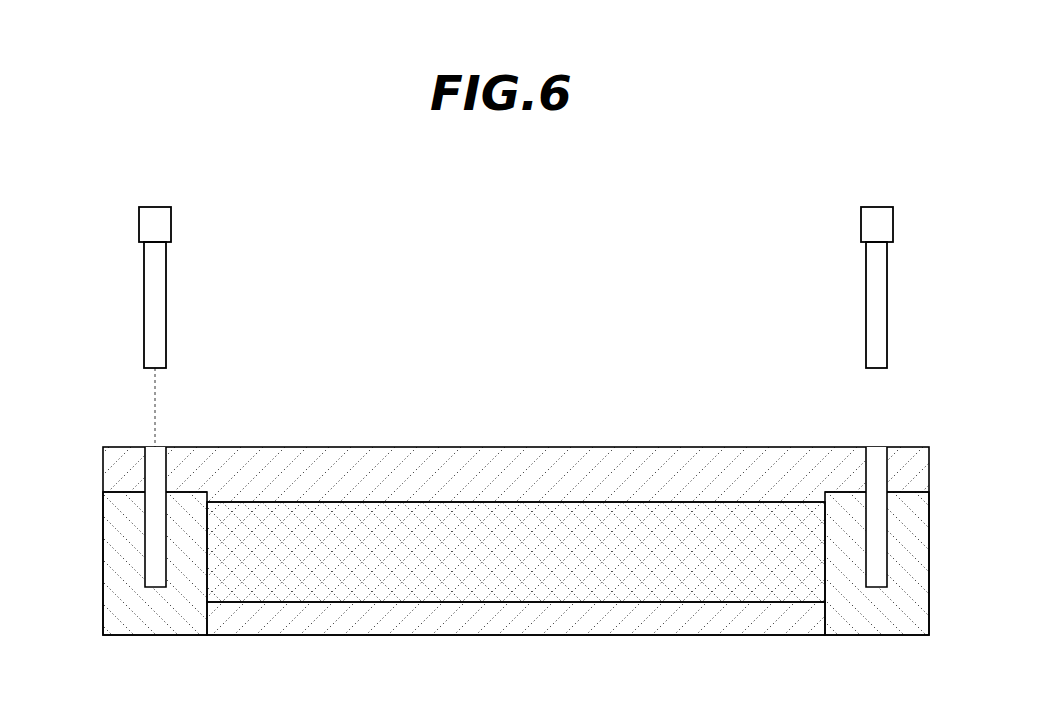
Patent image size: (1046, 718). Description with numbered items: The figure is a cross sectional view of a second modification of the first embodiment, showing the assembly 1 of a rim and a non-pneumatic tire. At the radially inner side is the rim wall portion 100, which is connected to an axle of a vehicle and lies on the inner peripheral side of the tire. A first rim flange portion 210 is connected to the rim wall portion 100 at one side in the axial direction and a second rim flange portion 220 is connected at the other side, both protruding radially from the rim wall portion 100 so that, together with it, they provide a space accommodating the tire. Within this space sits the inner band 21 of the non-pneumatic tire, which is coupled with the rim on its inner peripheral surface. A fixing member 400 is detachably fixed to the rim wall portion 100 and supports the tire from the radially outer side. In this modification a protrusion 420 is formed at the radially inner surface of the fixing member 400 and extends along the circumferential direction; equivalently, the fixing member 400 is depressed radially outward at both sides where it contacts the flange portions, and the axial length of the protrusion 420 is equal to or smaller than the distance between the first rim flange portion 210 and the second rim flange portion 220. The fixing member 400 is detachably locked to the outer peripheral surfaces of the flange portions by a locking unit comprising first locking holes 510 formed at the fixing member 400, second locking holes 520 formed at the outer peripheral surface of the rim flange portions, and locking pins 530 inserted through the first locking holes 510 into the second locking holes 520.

The assembly 1 is at (538, 223).
The rim wall portion 100 is at (533, 637).
The first rim flange portion 210 is at (168, 623).
The second rim flange portion 220 is at (880, 623).
The fixing member 400 is at (535, 466).
The protrusion 420 is at (422, 496).
The inner band 21 is at (622, 517).
The first locking hole 510 is at (148, 470).
The second locking hole 520 is at (148, 547).
The locking pin 530 is at (165, 223).